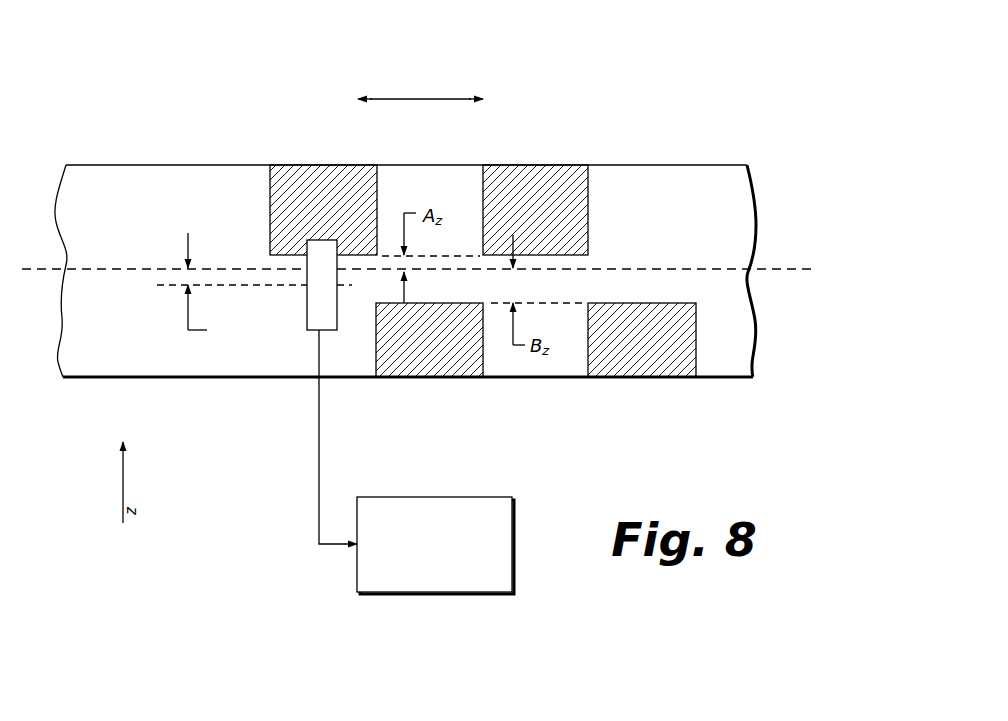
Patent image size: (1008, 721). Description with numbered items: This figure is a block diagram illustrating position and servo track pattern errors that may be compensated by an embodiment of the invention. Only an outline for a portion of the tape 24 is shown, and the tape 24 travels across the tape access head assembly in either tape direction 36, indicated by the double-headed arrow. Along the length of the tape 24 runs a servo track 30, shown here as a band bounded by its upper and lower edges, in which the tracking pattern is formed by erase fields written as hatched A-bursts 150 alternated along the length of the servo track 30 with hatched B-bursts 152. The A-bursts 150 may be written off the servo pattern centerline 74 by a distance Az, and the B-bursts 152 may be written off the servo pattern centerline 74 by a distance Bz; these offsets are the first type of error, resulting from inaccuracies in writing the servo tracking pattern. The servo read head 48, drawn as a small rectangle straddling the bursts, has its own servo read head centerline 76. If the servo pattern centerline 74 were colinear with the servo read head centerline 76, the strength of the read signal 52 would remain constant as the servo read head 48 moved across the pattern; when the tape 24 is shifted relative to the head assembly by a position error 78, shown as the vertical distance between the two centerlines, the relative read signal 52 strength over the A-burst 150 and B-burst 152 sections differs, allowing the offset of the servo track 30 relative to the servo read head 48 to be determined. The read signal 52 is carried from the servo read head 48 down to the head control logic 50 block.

The tape 24 is at (128, 78).
The servo track 30 is at (683, 165).
The tape direction 36 is at (433, 101).
The servo read head 48 is at (318, 332).
The head control logic 50 is at (452, 497).
The read signal 52 is at (319, 462).
The servo pattern centerline 74 is at (90, 268).
The servo read head centerline 76 is at (250, 287).
The position error 78 is at (188, 332).
The A-bursts 150 is at (320, 165).
The B-bursts 152 is at (440, 378).